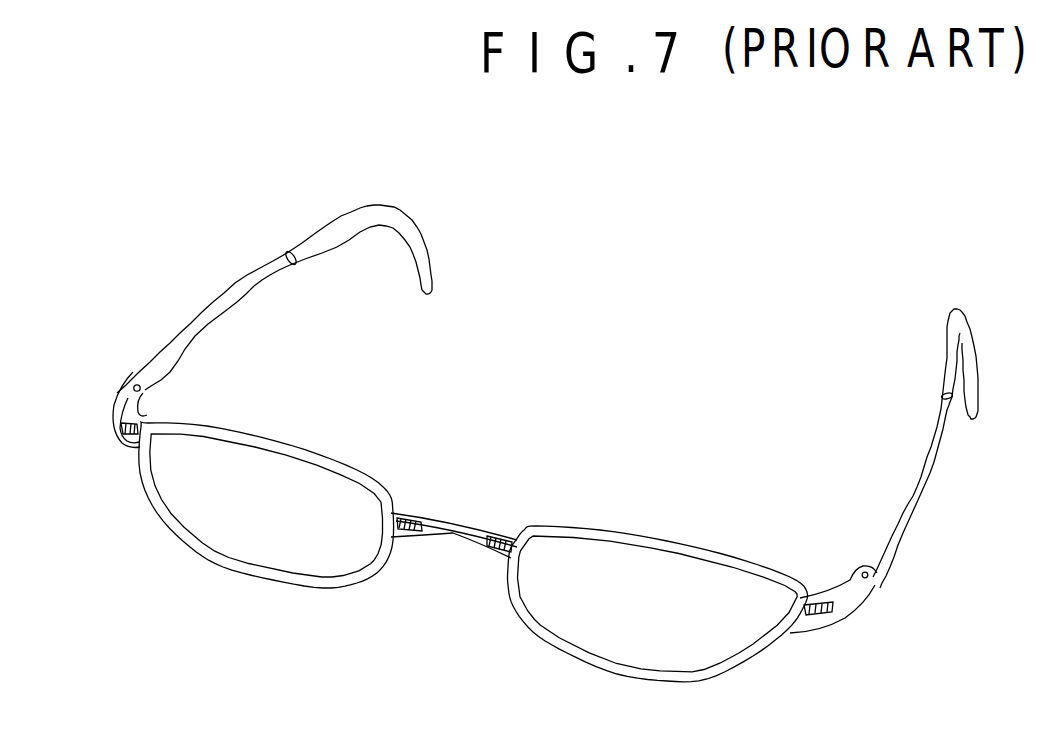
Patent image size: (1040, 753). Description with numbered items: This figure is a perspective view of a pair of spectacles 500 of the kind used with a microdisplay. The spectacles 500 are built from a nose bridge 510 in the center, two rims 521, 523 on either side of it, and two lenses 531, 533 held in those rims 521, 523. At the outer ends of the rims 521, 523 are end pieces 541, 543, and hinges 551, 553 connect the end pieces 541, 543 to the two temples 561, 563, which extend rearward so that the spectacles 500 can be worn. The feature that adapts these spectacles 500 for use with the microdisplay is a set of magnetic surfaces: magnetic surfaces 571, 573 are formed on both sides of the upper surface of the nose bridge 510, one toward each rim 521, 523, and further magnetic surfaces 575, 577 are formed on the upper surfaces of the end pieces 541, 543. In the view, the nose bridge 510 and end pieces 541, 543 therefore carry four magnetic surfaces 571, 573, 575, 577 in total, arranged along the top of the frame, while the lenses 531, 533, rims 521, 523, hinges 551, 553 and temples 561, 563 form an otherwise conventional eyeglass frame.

The spectacles 500 is at (320, 440).
The nose bridge 510 is at (452, 528).
The rim 521 is at (520, 607).
The rim 523 is at (370, 570).
The lens 531 is at (571, 622).
The lens 533 is at (307, 560).
The end piece 541 is at (834, 623).
The end piece 543 is at (115, 435).
The hinge 551 is at (866, 572).
The hinge 553 is at (148, 388).
The temple 561 is at (913, 506).
The temple 563 is at (180, 343).
The magnetic surface 571 is at (494, 555).
The magnetic surface 573 is at (410, 541).
The magnetic surface 575 is at (820, 600).
The magnetic surface 577 is at (143, 415).